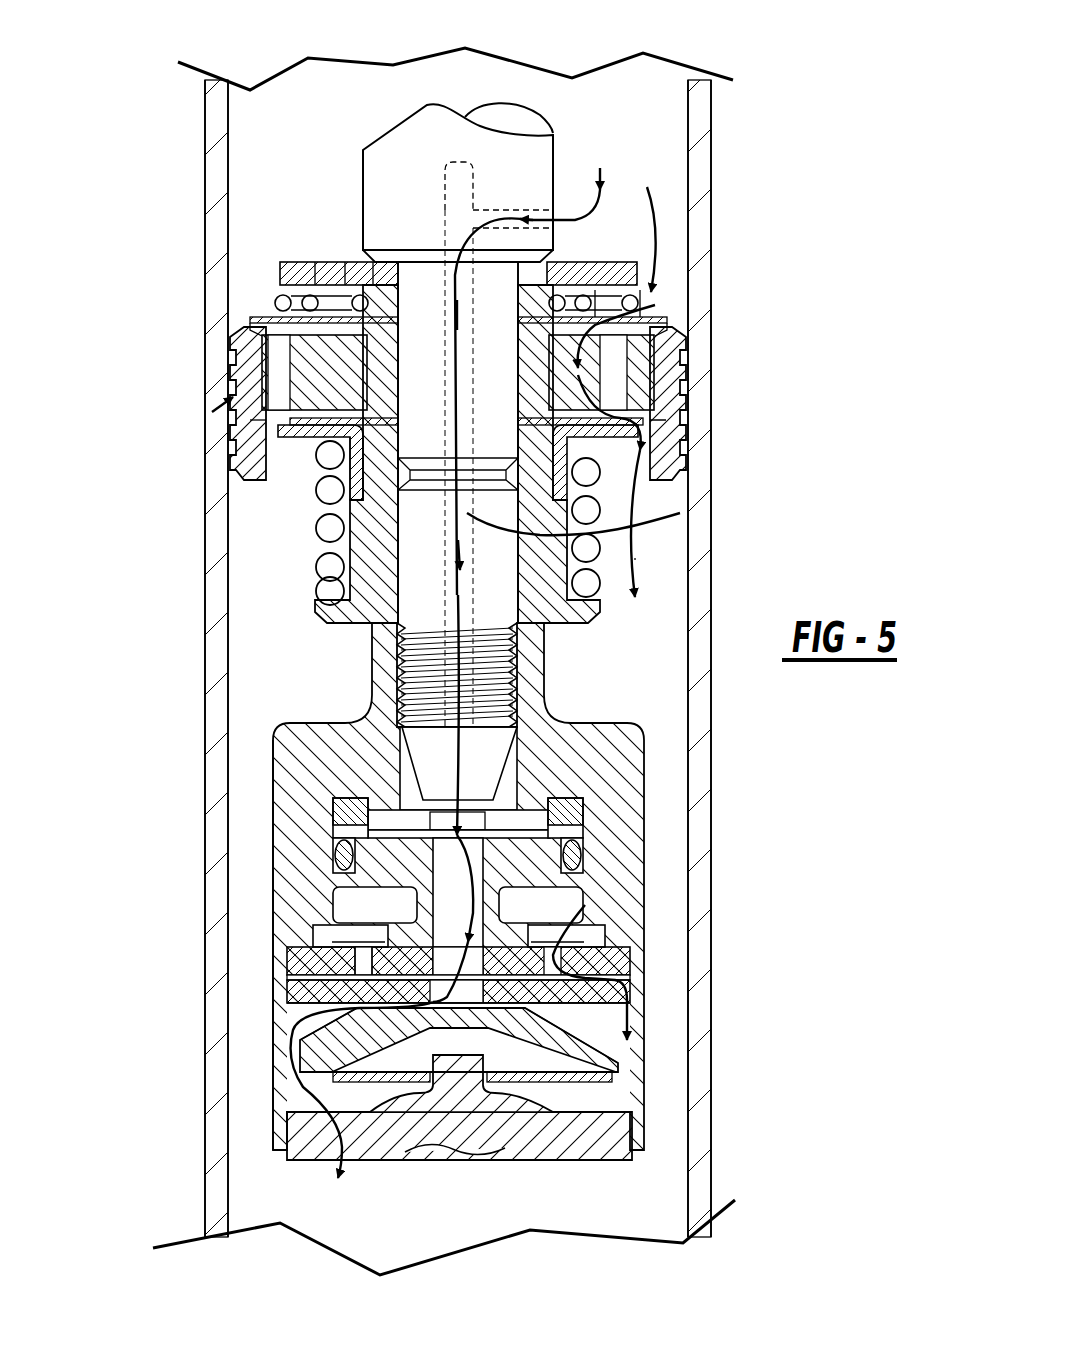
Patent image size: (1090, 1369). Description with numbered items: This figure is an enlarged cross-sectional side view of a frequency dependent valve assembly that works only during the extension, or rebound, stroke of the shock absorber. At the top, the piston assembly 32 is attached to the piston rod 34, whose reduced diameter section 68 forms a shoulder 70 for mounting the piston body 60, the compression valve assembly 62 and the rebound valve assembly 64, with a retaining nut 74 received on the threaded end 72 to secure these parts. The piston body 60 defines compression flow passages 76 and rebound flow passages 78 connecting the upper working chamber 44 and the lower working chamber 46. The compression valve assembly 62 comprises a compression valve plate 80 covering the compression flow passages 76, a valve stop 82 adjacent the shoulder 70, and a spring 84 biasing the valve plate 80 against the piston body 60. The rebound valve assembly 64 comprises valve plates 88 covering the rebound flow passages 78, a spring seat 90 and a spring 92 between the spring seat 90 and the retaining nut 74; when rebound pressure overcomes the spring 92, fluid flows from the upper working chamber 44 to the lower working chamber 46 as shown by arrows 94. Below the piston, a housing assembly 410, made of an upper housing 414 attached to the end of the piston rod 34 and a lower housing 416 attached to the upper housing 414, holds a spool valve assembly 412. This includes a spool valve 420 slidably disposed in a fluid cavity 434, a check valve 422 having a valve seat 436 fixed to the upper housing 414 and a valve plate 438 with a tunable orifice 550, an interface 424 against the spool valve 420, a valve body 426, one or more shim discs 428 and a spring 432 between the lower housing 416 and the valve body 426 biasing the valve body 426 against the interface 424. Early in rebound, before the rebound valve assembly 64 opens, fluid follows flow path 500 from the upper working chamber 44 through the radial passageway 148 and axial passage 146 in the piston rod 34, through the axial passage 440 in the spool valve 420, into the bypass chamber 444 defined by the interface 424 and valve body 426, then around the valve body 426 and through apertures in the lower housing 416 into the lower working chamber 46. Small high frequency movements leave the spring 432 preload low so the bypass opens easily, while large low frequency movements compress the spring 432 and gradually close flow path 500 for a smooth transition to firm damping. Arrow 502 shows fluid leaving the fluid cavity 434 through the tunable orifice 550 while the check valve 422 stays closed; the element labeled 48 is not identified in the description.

The piston assembly 32 is at (287, 195).
The piston rod 34 is at (505, 116).
The upper working chamber 44 is at (667, 113).
The lower working chamber 46 is at (287, 1199).
The nut threads 48 is at (685, 414).
The piston body 60 is at (664, 368).
The compression valve assembly 62 is at (640, 172).
The rebound valve assembly 64 is at (275, 498).
The reduced diameter section 68 is at (417, 347).
The shoulder 70 is at (433, 260).
The threaded end 72 is at (483, 660).
The retaining nut 74 is at (340, 618).
The compression flow passages 76 is at (280, 383).
The rebound flow passages 78 is at (685, 325).
The compression valve plate 80 is at (252, 317).
The valve stop 82 is at (292, 268).
The spring 84 is at (310, 303).
The valve plates 88 is at (296, 421).
The spring seat 90 is at (330, 432).
The spring 92 is at (330, 528).
The arrows 94 is at (635, 558).
The axial passage 146 is at (680, 513).
The radial passageway 148 is at (527, 212).
The housing assembly 410 is at (257, 821).
The spool valve assembly 412 is at (303, 1098).
The upper housing 414 is at (582, 752).
The lower housing 416 is at (600, 1147).
The spool valve 420 is at (510, 857).
The check valve 422 is at (370, 930).
The interface 424 is at (600, 976).
The valve body 426 is at (577, 1043).
The shim discs 428 is at (577, 1077).
The spring 432 is at (578, 1078).
The fluid cavity 434 is at (533, 917).
The valve seat 436 is at (310, 963).
The valve plate 438 is at (545, 965).
The axial passage 440 is at (352, 857).
The bypass chamber 444 is at (560, 1015).
The flow path 500 is at (460, 595).
The arrow 502 is at (610, 990).
The tunable orifice 550 is at (583, 938).